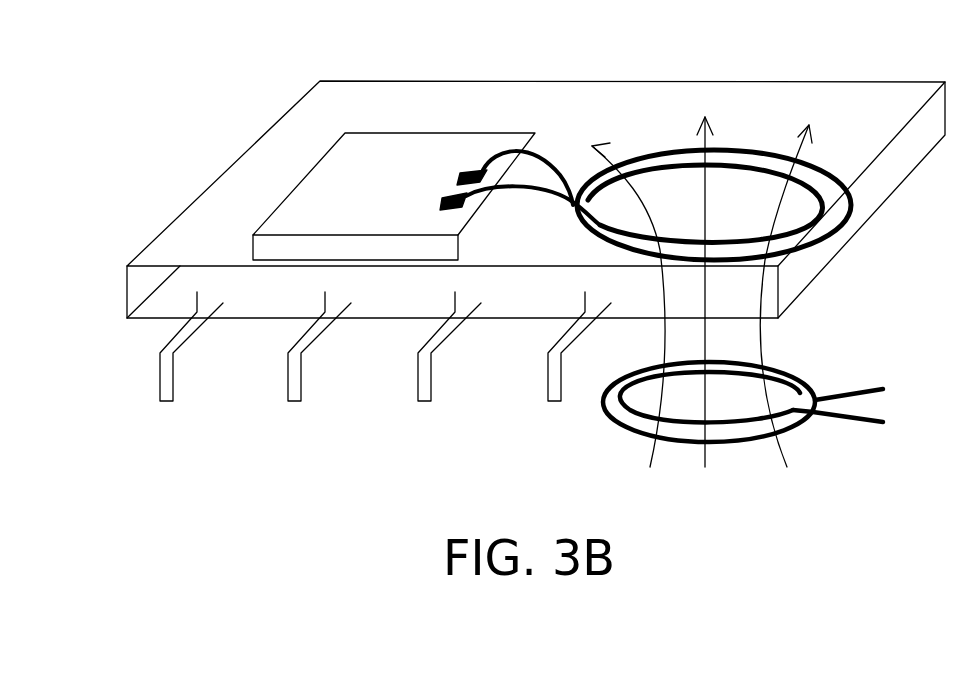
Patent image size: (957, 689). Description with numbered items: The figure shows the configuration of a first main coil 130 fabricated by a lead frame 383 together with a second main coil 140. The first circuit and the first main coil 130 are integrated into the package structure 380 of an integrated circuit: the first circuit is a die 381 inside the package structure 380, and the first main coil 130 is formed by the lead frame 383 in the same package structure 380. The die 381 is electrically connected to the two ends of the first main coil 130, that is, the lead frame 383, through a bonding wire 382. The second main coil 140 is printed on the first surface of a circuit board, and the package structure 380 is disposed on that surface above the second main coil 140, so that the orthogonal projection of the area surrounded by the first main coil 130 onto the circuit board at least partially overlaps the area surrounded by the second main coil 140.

The package structure 380 is at (893, 82).
The die 381 is at (334, 178).
The bonding wire 382 is at (548, 160).
The first main coil 130 is at (714, 137).
The lead frame 383 is at (743, 150).
The second main coil 140 is at (795, 370).